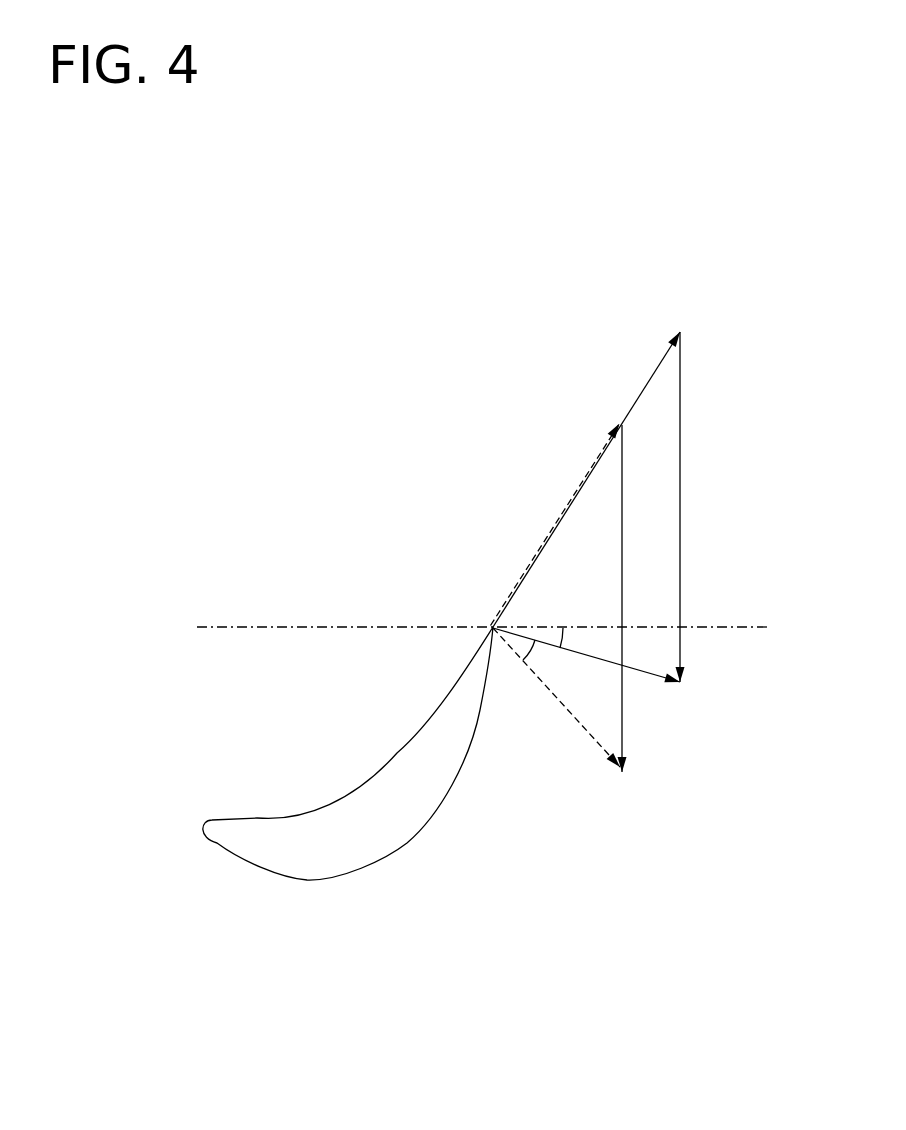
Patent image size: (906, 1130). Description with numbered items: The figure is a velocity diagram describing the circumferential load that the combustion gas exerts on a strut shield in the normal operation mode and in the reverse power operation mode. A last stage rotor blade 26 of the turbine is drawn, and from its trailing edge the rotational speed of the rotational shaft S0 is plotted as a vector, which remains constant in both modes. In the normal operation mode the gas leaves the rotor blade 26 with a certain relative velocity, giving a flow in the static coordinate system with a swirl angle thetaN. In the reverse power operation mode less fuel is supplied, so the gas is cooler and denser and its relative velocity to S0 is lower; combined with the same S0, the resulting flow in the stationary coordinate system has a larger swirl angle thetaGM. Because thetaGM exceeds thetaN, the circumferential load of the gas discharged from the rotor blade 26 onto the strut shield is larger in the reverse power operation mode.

The last stage rotor blade 26 is at (335, 848).
The rotational speed of rotational shaft S0 is at (680, 488).
The swirl angle in normal operation mode thetaN is at (572, 632).
The swirl angle in reverse power operation mode thetaGM is at (535, 645).